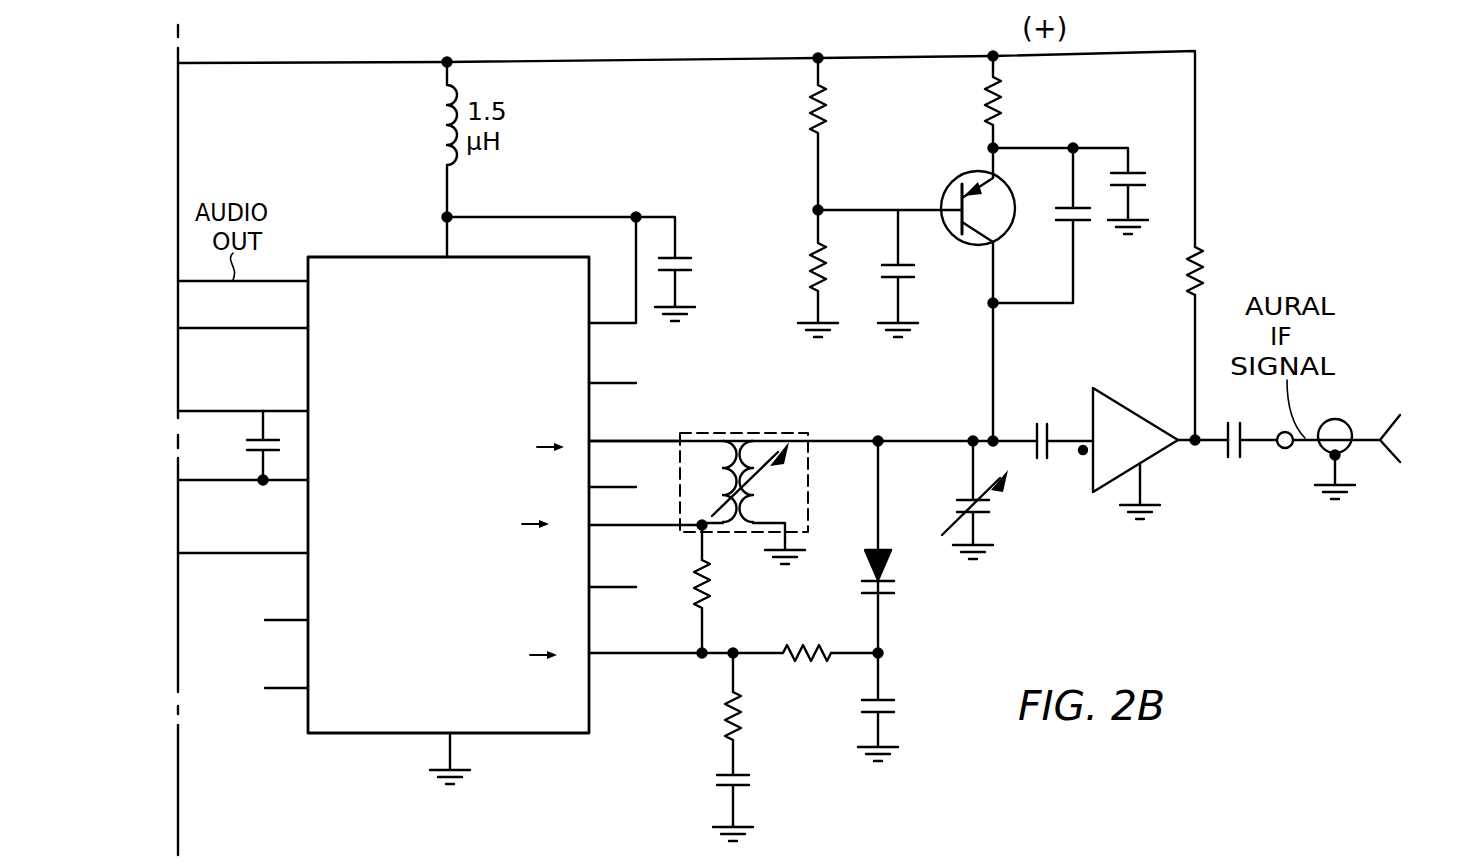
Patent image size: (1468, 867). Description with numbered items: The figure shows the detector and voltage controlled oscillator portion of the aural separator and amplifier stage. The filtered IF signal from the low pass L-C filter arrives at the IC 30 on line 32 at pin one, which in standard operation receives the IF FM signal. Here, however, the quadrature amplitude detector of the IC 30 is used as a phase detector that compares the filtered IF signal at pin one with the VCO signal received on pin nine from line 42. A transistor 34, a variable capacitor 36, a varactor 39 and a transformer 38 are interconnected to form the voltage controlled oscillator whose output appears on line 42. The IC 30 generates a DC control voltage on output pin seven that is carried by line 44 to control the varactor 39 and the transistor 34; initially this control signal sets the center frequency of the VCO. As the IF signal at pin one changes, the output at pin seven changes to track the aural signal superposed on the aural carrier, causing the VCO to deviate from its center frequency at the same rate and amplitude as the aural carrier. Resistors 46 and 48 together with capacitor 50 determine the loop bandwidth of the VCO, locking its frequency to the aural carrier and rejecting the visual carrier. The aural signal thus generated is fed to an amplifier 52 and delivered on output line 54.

The IC 30 is at (540, 735).
The line 32 is at (232, 332).
The transistor 34 is at (960, 194).
The variable capacitor 36 is at (987, 515).
The transformer 38 is at (748, 433).
The varactor 39 is at (895, 578).
The line 42 is at (629, 441).
The line 44 is at (642, 656).
The resistor 46 is at (740, 730).
The resistor 48 is at (705, 594).
The capacitor 50 is at (743, 783).
The amplifier 52 is at (1155, 456).
The line 54 is at (1388, 402).